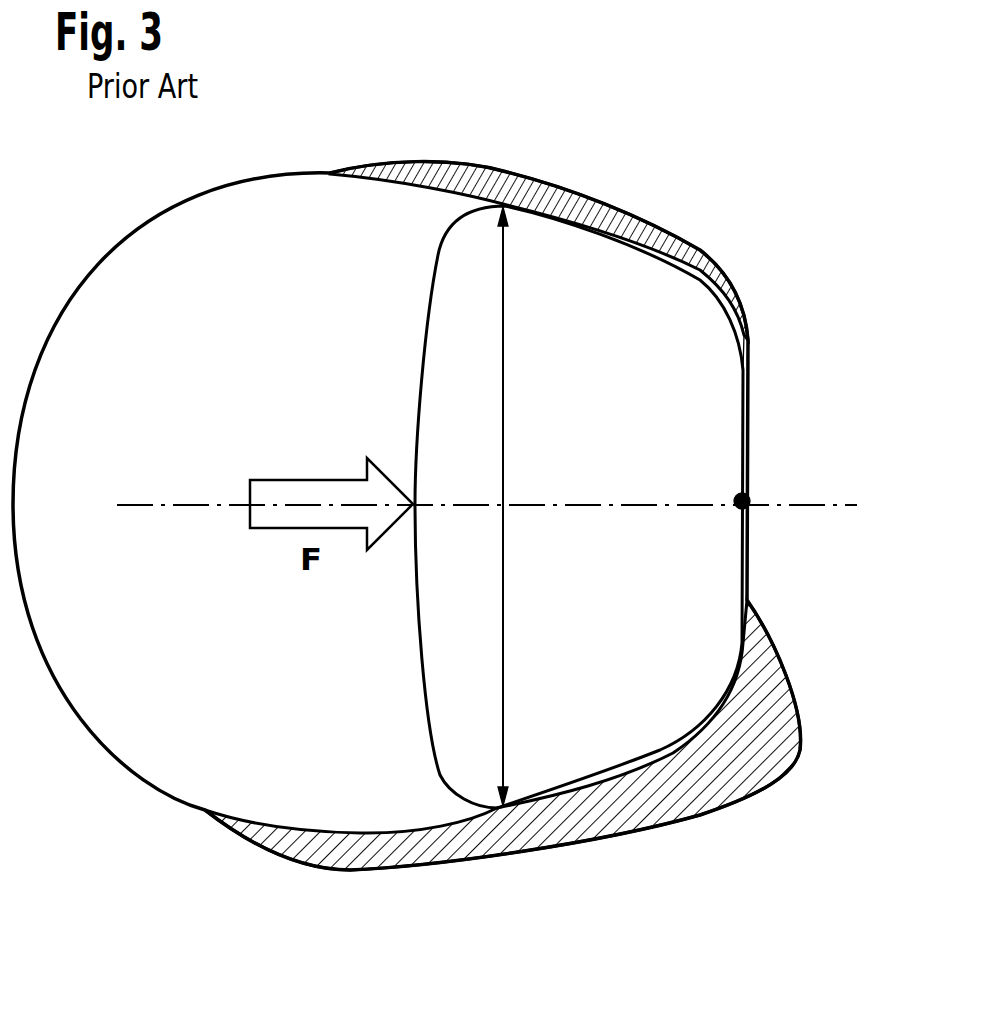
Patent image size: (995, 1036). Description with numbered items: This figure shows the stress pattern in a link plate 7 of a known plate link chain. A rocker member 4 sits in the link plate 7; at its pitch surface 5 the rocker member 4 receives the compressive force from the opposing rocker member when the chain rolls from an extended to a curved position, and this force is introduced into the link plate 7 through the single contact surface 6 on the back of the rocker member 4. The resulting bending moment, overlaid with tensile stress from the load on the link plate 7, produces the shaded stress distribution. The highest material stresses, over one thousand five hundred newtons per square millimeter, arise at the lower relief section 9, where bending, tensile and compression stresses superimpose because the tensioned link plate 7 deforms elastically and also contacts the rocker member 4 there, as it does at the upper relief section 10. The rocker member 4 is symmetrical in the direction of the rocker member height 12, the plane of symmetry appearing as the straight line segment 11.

The rocker member 4 is at (650, 273).
The pitch surface 5 is at (423, 676).
The contact surface 6 is at (750, 495).
The link plate 7 is at (625, 123).
The lower relief section 9 is at (725, 715).
The upper relief section 10 is at (736, 291).
The straight line segment 11 is at (838, 512).
The rocker member height 12 is at (505, 352).